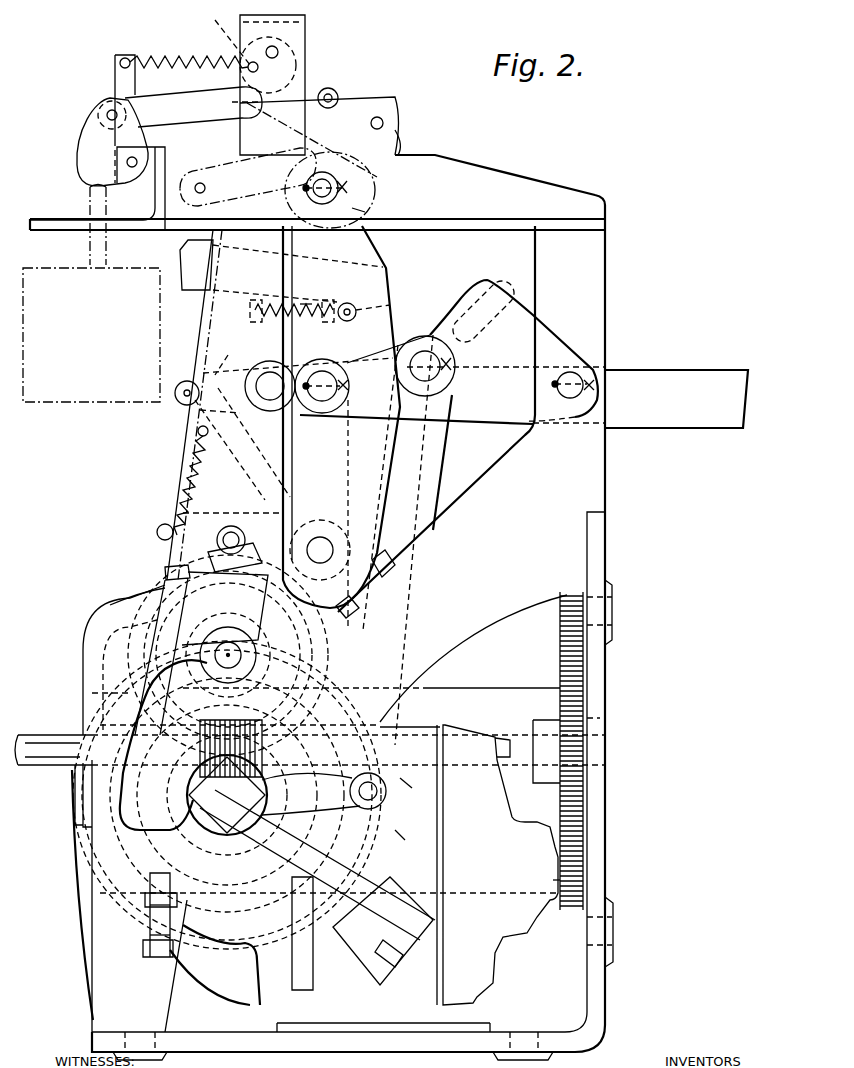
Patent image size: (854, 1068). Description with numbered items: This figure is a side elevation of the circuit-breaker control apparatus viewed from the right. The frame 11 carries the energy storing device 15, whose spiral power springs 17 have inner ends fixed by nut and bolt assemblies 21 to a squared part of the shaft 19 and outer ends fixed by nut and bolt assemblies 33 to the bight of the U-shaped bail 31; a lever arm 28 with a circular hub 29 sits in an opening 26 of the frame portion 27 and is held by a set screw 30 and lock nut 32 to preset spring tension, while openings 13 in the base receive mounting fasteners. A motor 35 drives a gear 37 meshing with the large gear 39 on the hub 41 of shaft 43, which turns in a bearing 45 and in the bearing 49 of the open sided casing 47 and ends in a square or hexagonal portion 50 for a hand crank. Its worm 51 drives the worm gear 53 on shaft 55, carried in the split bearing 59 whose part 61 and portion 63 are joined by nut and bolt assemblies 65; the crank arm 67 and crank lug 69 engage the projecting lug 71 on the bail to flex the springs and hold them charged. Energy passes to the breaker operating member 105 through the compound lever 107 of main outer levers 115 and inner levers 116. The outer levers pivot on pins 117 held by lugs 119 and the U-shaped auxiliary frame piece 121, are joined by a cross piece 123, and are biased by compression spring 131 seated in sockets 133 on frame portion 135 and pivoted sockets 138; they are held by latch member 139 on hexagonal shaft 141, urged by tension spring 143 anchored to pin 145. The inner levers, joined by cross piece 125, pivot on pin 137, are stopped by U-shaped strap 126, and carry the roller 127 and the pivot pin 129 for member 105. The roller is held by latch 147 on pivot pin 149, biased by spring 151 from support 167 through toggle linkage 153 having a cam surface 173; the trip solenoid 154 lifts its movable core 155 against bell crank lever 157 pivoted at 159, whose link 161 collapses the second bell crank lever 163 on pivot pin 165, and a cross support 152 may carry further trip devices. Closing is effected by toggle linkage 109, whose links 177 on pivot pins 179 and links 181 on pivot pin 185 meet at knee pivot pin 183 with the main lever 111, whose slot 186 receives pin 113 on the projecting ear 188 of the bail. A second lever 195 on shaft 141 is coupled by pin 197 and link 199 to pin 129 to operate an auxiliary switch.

The frame 11 is at (607, 272).
The openings 13 is at (610, 622).
The energy storing device 15 is at (36, 804).
The spiral power springs 17 is at (75, 858).
The shaft 19 is at (227, 795).
The nut and bolt assemblies 21 is at (227, 795).
The opening 26 is at (227, 795).
The portion of the frame 27 is at (490, 688).
The lever arm 28 is at (148, 880).
The circular hub 29 is at (311, 794).
The set screw 30 is at (150, 936).
The U-shaped bail 31 is at (103, 674).
The lock nut 32 is at (150, 908).
The nut and bolt assemblies 33 is at (402, 866).
The motor 35 is at (495, 965).
The gear 37 is at (583, 862).
The large gear 39 is at (583, 820).
The hub 41 is at (545, 720).
The shaft 43 is at (512, 738).
The bearing 45 is at (600, 720).
The open sided casing 47 is at (82, 651).
The bearing 49 is at (92, 693).
The square or hexagonal portion 50 is at (45, 735).
The worm 51 is at (285, 722).
The worm gear 53 is at (330, 660).
The shaft 55 is at (308, 651).
The split bearing 59 is at (298, 637).
The part of the split bearing 61 is at (168, 575).
The other portion of the split bearing 63 is at (285, 623).
The nut and bolt assemblies 65 is at (140, 660).
The crank arm 67 is at (204, 640).
The crank lug 69 is at (196, 640).
The projecting lug 71 is at (118, 612).
The breaker operating member 105 is at (672, 370).
The compound lever 107 is at (386, 251).
The toggle linkage 109 is at (462, 322).
The main lever 111 is at (430, 575).
The pin 113 is at (387, 795).
The main outer levers 115 is at (365, 212).
The inner levers 116 is at (232, 356).
The pivot pins 117 is at (340, 186).
The lugs 119 is at (500, 180).
The U-shaped auxiliary frame piece 121 is at (308, 45).
The cross piece 123 is at (380, 580).
The cross piece 125 is at (360, 618).
The U-shaped strap 126 is at (182, 248).
The roller 127 is at (315, 190).
The pivot pin 129 is at (270, 374).
The compression spring 131 is at (310, 302).
The sockets 133 is at (265, 297).
The portion of the frame 135 is at (200, 328).
The pivot pin 137 is at (321, 537).
The pivoted sockets 138 is at (348, 303).
The latch member 139 is at (397, 515).
The hexagonal shaft 141 is at (170, 553).
The tension spring 143 is at (184, 480).
The pin 145 is at (197, 431).
The latch 147 is at (400, 100).
The pivot pin 149 is at (206, 188).
The spring 151 is at (180, 62).
The cross support 152 is at (48, 217).
The toggle linkage 153 is at (340, 92).
The solenoid 154 is at (58, 405).
The movable core 155 is at (90, 250).
The bell crank lever 157 is at (75, 130).
The pivot 159 is at (132, 168).
The link 161 is at (190, 124).
The second bell crank lever 163 is at (244, 51).
The pivot pin 165 is at (277, 52).
The support 167 is at (118, 85).
The cam surface 173 is at (404, 148).
The toggle links 177 is at (390, 347).
The pivot pins 179 is at (321, 402).
The toggle links 181 is at (503, 300).
The knee pivot pin 183 is at (425, 381).
The pivot pin 185 is at (575, 372).
The slot 186 is at (402, 837).
The projecting ear 188 is at (404, 786).
The second lever 195 is at (176, 506).
The pin 197 is at (181, 385).
The link 199 is at (242, 415).